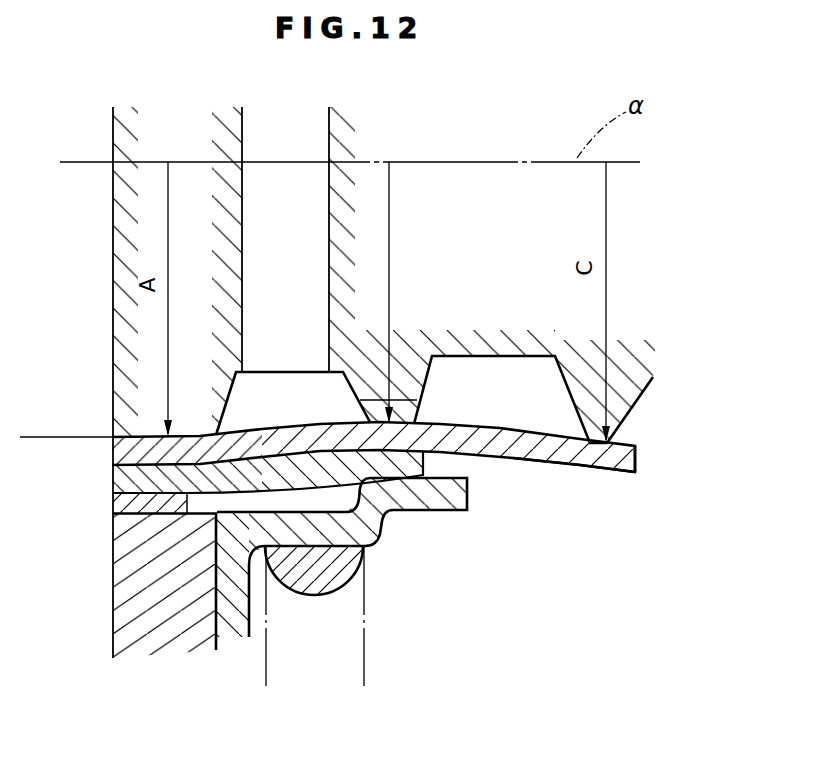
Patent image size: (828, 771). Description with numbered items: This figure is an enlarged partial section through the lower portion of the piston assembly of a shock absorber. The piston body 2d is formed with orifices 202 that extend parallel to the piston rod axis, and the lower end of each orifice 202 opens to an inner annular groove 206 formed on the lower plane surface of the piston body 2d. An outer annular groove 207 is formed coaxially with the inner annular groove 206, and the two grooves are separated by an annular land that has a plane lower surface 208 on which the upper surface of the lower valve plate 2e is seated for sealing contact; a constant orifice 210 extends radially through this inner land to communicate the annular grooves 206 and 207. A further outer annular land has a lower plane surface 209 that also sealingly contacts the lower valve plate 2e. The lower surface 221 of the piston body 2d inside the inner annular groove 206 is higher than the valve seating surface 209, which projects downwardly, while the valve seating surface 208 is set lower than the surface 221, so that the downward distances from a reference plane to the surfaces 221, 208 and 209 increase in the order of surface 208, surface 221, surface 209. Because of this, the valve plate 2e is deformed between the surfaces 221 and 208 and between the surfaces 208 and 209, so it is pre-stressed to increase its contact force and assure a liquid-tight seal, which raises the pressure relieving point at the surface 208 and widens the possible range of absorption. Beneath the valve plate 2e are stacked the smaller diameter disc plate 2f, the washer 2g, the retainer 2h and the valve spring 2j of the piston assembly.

The orifice 202 is at (297, 213).
The inner annular groove 206 is at (316, 392).
The outer annular groove 207 is at (533, 400).
The plane lower surface 208 is at (433, 455).
The lower plane surface 209 is at (625, 477).
The constant orifice 210 is at (405, 410).
The lower surface 221 is at (117, 443).
The piston body 2d is at (630, 298).
The lower valve plate 2e is at (588, 455).
The smaller diameter disc plate 2f is at (117, 478).
The washer 2g is at (120, 522).
The retainer 2h is at (430, 493).
The valve spring 2j is at (337, 558).